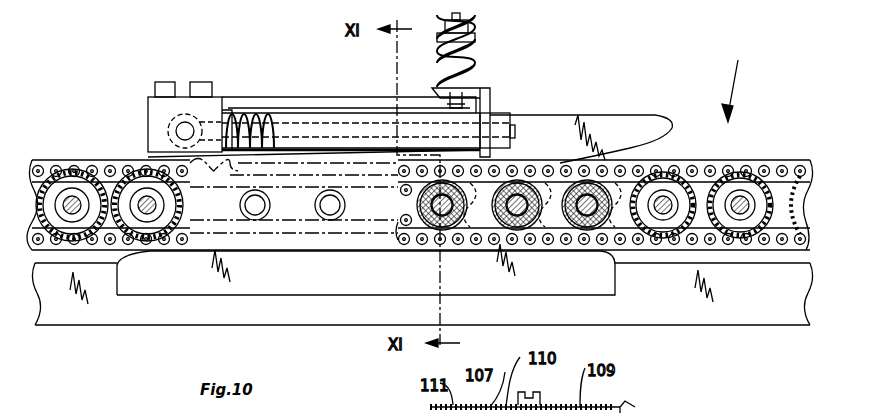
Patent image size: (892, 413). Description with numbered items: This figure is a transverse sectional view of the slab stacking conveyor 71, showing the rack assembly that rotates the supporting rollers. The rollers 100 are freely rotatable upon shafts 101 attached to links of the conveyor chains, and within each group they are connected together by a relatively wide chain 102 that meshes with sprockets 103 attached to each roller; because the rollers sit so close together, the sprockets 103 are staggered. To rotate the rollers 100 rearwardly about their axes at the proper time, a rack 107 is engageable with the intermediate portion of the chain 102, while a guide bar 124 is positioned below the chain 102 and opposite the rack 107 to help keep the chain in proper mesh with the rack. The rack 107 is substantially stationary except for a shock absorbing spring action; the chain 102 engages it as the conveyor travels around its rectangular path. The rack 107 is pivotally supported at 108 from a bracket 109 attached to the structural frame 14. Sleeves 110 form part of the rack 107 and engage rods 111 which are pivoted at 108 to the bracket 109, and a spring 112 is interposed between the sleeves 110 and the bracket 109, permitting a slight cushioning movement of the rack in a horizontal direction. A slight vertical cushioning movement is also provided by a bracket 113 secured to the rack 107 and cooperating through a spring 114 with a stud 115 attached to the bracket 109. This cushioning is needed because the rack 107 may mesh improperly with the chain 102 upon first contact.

The structural frame 14 is at (753, 312).
The conveyor 71 is at (735, 81).
The rollers 100 is at (738, 167).
The shafts 101 is at (672, 200).
The chain 102 is at (700, 243).
The sprockets 103 is at (550, 252).
The rack 107 is at (623, 132).
The pivot 108 is at (165, 133).
The bracket 109 is at (157, 143).
The sleeves 110 is at (299, 132).
The rods 111 is at (250, 127).
The spring 112 is at (238, 118).
The bracket 113 is at (485, 100).
The spring 114 is at (473, 68).
The stud 115 is at (457, 16).
The guide bar 124 is at (173, 284).